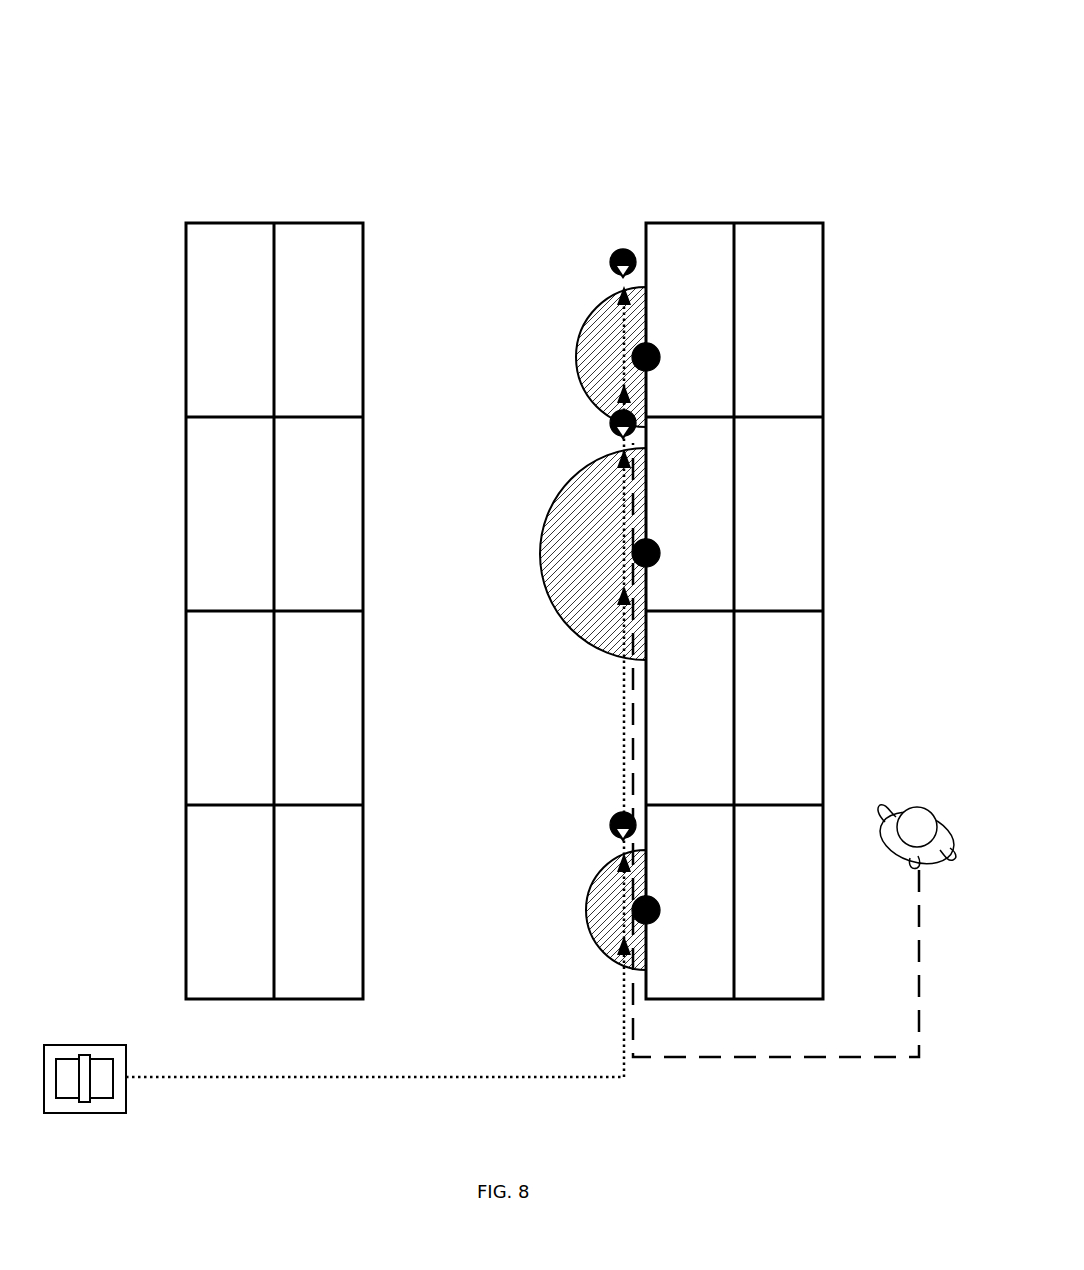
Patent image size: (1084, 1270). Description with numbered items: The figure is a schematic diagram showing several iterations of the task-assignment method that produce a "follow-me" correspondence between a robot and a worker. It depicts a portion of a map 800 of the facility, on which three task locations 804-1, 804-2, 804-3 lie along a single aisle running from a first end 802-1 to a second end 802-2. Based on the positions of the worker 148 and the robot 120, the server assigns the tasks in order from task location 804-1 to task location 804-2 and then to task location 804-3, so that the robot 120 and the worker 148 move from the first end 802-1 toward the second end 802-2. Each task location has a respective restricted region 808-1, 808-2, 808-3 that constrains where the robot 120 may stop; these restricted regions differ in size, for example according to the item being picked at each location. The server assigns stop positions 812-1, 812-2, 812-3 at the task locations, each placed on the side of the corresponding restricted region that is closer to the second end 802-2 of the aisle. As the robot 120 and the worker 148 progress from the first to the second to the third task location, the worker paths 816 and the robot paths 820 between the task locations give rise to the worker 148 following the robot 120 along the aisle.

The map 800 is at (642, 94).
The first end 802-1 is at (422, 1008).
The second end 802-2 is at (438, 212).
The task location 804-1 is at (660, 910).
The task location 804-2 is at (660, 553).
The task location 804-3 is at (660, 357).
The restricted region 808-1 is at (586, 908).
The restricted region 808-2 is at (548, 598).
The restricted region 808-3 is at (575, 357).
The stop position 812-1 is at (607, 829).
The stop position 812-2 is at (607, 427).
The stop position 812-3 is at (608, 262).
The worker path 816 is at (633, 485).
The robot path 820 is at (620, 330).
The robot 120 is at (80, 1034).
The worker 148 is at (923, 806).